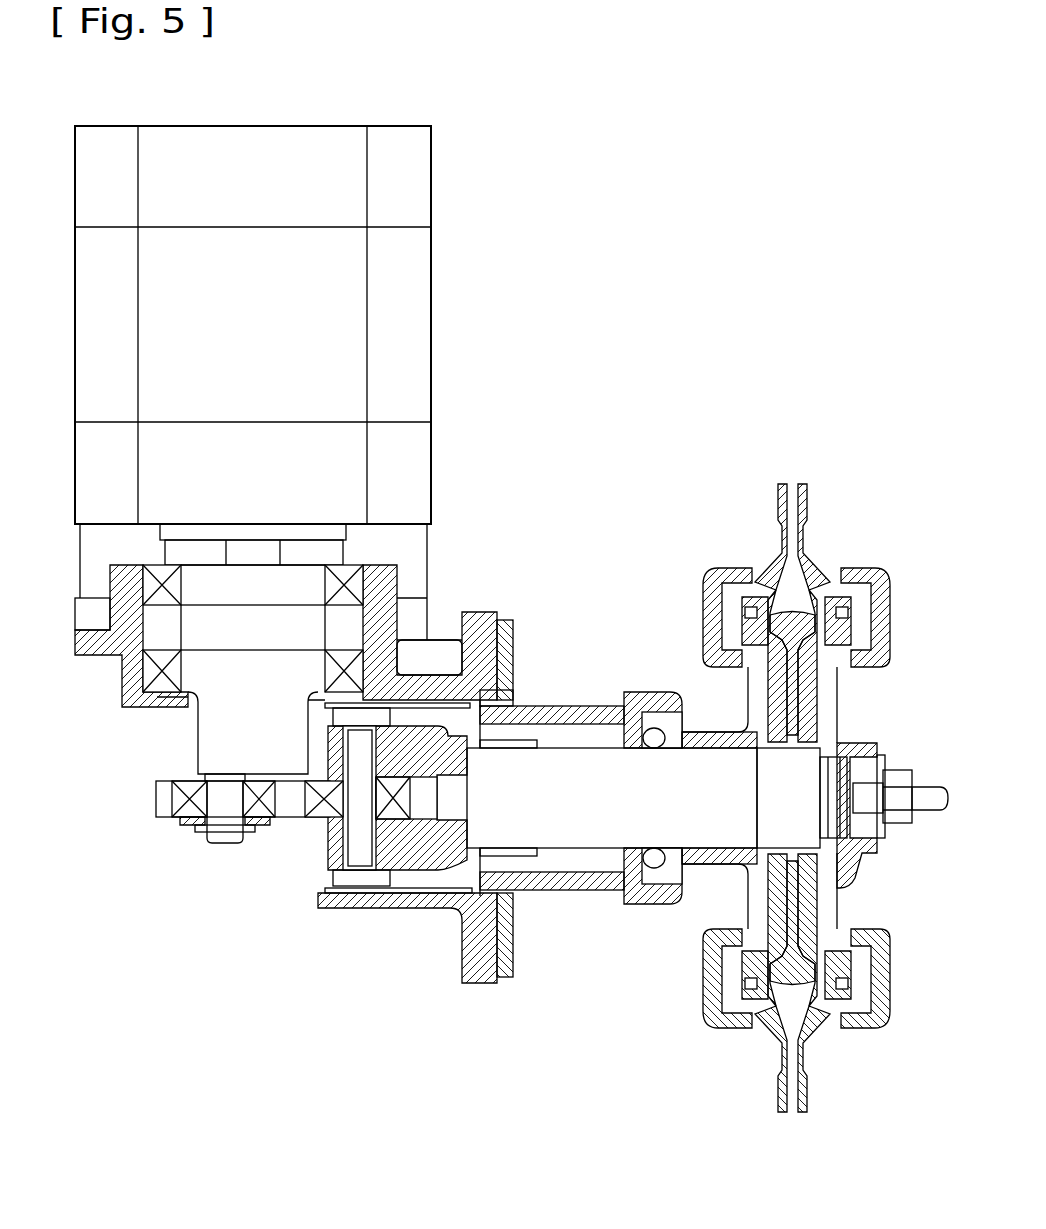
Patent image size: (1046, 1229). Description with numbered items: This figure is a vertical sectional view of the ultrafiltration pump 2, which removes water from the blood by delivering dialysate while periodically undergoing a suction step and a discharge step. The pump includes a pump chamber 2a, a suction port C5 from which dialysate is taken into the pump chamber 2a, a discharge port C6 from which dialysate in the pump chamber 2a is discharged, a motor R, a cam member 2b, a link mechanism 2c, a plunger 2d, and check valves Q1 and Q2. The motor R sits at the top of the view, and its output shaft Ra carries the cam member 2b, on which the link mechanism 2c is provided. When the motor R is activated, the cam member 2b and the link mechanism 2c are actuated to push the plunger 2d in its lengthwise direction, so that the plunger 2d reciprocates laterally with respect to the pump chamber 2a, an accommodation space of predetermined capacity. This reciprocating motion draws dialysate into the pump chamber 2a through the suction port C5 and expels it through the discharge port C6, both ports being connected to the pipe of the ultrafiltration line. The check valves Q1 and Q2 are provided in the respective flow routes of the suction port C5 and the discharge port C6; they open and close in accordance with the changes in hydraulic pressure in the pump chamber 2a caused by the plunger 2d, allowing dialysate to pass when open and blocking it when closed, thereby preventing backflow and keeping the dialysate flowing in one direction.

The motor R is at (431, 185).
The output shaft Ra is at (275, 550).
The ultrafiltration pump 2 is at (729, 322).
The pump chamber 2a is at (850, 850).
The cam member 2b is at (228, 740).
The link mechanism 2c is at (160, 804).
The plunger 2d is at (588, 835).
The check valve Q1 is at (786, 632).
The check valve Q2 is at (835, 905).
The suction port C5 is at (808, 1100).
The discharge port C6 is at (803, 530).